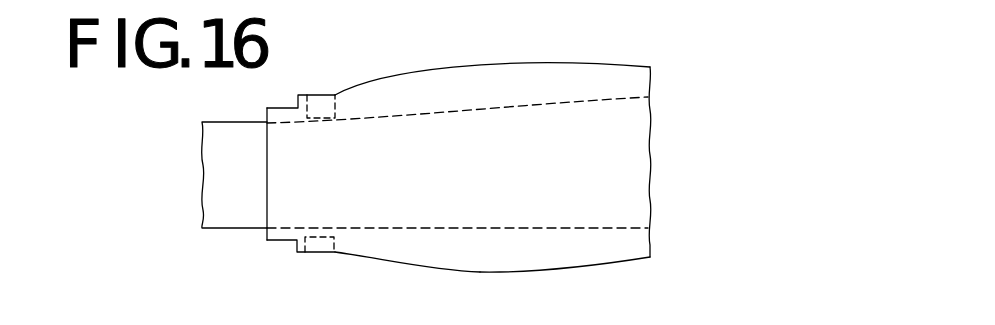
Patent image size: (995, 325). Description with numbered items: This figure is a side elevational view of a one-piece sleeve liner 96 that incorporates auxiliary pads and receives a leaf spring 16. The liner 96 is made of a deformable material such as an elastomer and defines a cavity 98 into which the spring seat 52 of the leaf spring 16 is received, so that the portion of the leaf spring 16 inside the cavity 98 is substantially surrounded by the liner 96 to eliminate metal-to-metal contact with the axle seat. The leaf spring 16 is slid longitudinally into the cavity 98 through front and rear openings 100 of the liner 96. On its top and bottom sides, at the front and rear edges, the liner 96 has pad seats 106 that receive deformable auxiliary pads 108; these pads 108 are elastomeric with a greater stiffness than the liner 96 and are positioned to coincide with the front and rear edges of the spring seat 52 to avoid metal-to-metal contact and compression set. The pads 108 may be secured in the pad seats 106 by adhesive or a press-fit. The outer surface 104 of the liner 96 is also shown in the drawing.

The leaf spring 16 is at (210, 155).
The spring seat 52 is at (648, 113).
The liner 96 is at (598, 272).
The cavity 98 is at (518, 229).
The front and rear openings 100 is at (268, 196).
The outer surface 104 is at (507, 62).
The pad seats 106 is at (298, 95).
The auxiliary pads 108 is at (325, 95).